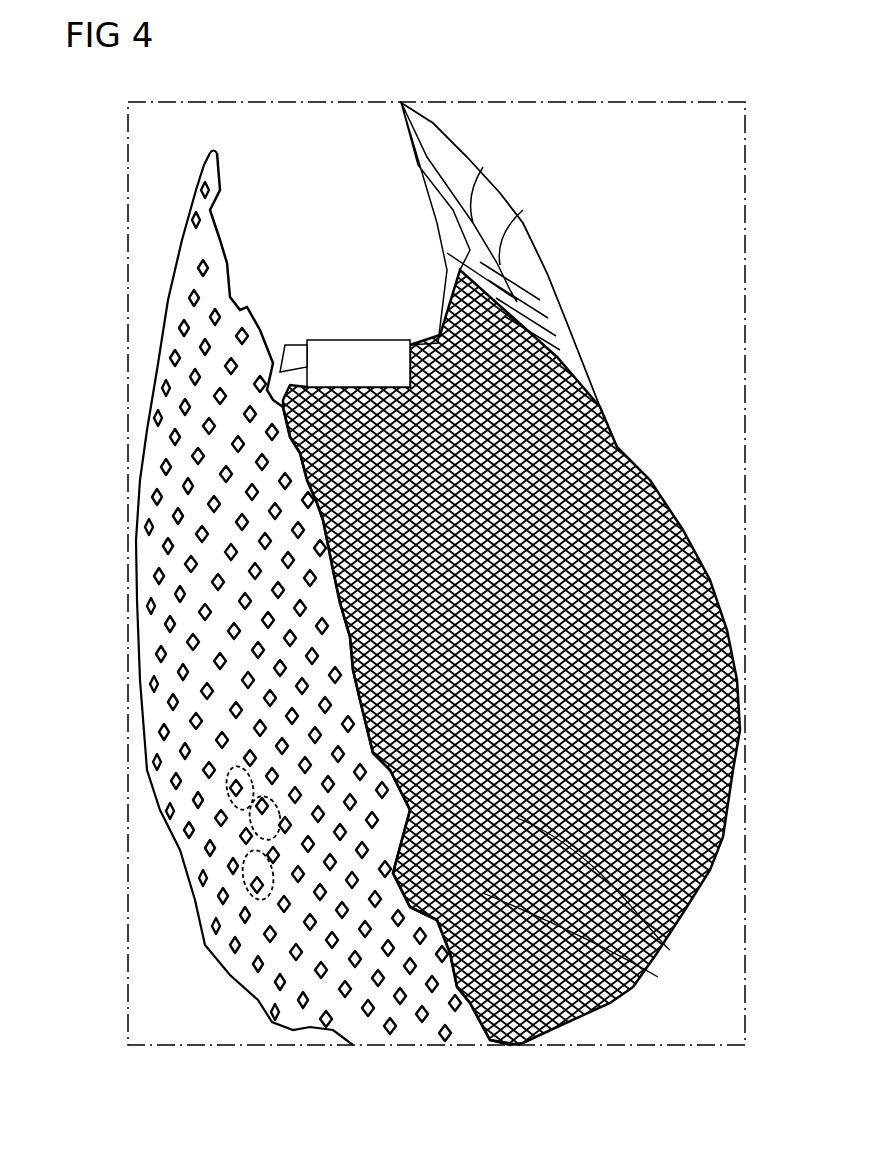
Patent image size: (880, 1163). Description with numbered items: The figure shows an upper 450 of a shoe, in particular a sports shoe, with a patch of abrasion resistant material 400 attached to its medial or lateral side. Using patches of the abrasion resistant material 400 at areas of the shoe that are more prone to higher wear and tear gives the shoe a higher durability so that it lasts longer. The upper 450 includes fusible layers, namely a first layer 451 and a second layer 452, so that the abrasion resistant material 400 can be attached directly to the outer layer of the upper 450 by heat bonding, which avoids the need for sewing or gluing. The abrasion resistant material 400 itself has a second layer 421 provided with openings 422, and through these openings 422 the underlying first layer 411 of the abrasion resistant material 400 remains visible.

The abrasion resistant material 400 is at (308, 1048).
The first layer 411 is at (290, 667).
The second layer 421 is at (270, 617).
The openings 422 is at (240, 866).
The upper 450 is at (626, 1031).
The first layer of upper 451 is at (658, 977).
The second layer of upper 452 is at (670, 950).